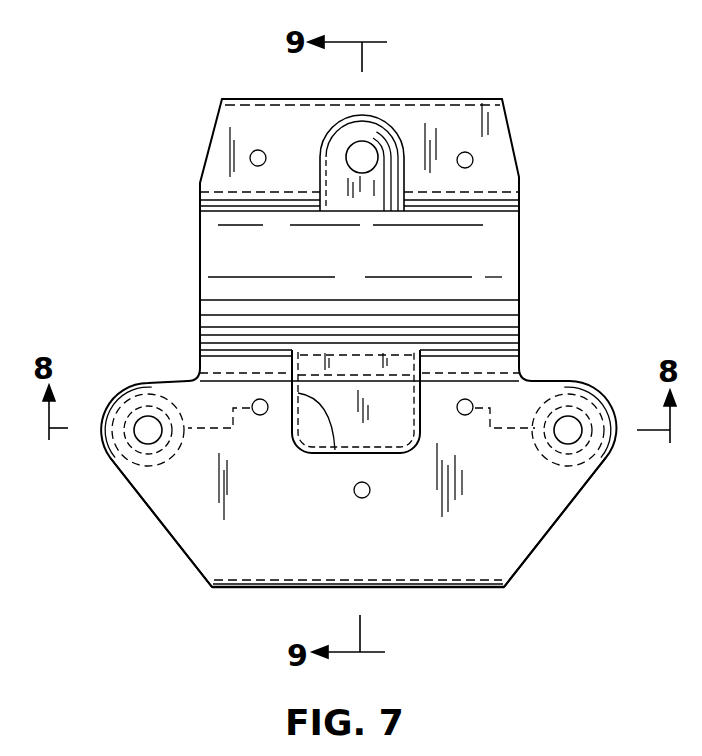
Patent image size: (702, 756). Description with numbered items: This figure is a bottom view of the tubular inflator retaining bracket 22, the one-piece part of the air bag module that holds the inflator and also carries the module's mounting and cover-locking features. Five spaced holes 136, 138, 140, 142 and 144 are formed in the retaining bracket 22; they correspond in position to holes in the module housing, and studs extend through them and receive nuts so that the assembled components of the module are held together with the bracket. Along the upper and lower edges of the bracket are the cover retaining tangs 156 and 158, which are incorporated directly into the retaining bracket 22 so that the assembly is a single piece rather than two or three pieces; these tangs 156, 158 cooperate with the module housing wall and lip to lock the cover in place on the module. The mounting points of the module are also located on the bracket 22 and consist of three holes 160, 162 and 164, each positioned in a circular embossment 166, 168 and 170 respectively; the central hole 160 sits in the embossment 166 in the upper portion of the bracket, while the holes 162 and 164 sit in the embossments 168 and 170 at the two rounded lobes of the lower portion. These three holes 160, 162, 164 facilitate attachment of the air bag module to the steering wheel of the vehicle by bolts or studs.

The tubular inflator retaining bracket 22 is at (210, 82).
The hole 136 is at (473, 160).
The hole 138 is at (250, 158).
The hole 140 is at (473, 403).
The hole 142 is at (358, 497).
The hole 144 is at (253, 403).
The cover retaining tang 156 is at (411, 592).
The cover retaining tang 158 is at (485, 104).
The mounting hole 160 is at (368, 148).
The mounting hole 162 is at (577, 437).
The mounting hole 164 is at (140, 435).
The circular embossment 166 is at (330, 140).
The circular embossment 168 is at (592, 485).
The circular embossment 170 is at (143, 497).